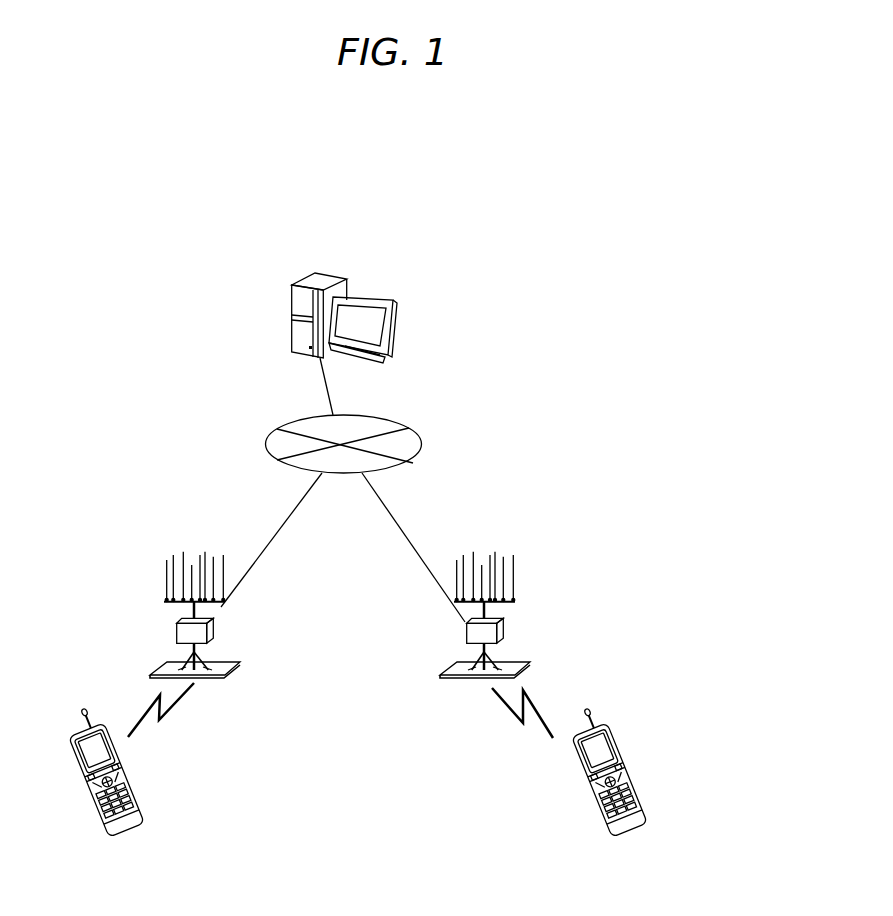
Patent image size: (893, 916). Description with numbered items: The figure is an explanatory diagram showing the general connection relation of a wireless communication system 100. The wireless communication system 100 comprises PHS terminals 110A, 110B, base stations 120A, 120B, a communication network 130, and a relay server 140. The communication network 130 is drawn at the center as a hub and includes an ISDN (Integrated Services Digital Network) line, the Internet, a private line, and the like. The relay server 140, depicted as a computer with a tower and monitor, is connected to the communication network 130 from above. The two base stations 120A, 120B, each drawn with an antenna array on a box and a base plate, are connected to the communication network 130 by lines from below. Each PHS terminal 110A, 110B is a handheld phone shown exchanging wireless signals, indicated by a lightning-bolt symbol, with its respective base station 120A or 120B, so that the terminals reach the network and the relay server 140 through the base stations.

The wireless communication system 100 is at (471, 403).
The PHS terminal 110A is at (143, 828).
The PHS terminal 110B is at (650, 832).
The base station 120A is at (247, 638).
The base station 120B is at (537, 638).
The communication network 130 is at (266, 444).
The relay server 140 is at (340, 271).